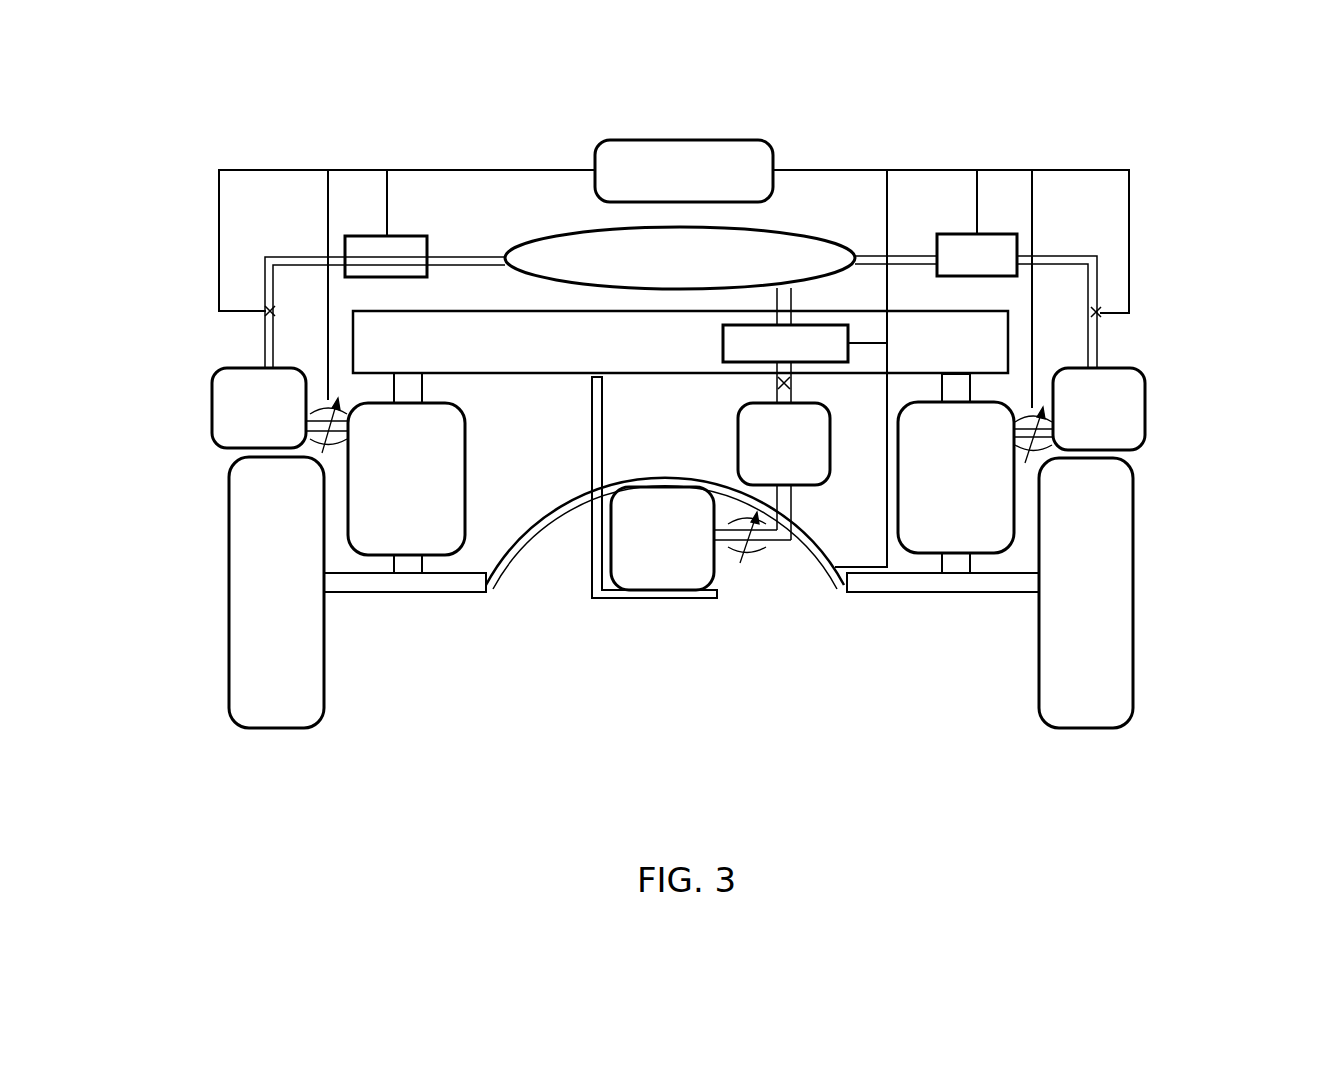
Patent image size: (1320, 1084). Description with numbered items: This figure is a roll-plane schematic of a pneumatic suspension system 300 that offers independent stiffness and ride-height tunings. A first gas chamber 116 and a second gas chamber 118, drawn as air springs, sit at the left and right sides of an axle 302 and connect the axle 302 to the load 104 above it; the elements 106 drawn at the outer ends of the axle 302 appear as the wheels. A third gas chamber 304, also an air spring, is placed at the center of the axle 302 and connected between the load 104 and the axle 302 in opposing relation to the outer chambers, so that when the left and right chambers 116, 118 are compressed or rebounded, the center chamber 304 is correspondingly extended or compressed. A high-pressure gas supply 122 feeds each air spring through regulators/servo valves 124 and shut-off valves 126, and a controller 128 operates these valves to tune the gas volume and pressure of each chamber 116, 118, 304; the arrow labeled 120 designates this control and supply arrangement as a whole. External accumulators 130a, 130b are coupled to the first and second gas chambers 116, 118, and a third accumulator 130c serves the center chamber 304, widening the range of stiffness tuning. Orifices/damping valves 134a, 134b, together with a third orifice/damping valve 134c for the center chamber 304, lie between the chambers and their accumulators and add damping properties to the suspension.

The control system 120 is at (410, 153).
The controller 128 is at (668, 139).
The high-pressure gas supply 122 is at (770, 238).
The regulators/servo valves 124 is at (405, 235).
The shut-off valves 126 is at (266, 312).
The load 104 is at (562, 347).
The external accumulator 130a is at (212, 408).
The external accumulator 130b is at (1145, 410).
The third accumulator 130c is at (738, 435).
The first gas chamber 116 is at (465, 462).
The second gas chamber 118 is at (903, 483).
The wheel 106 is at (350, 727).
The axle 302 is at (418, 583).
The third gas chamber 304 is at (682, 578).
The pneumatic suspension system 300 is at (897, 690).
The orifice/damping valve 134a is at (321, 418).
The orifice/damping valve 134b is at (1029, 422).
The third orifice/damping valve 134c is at (747, 542).